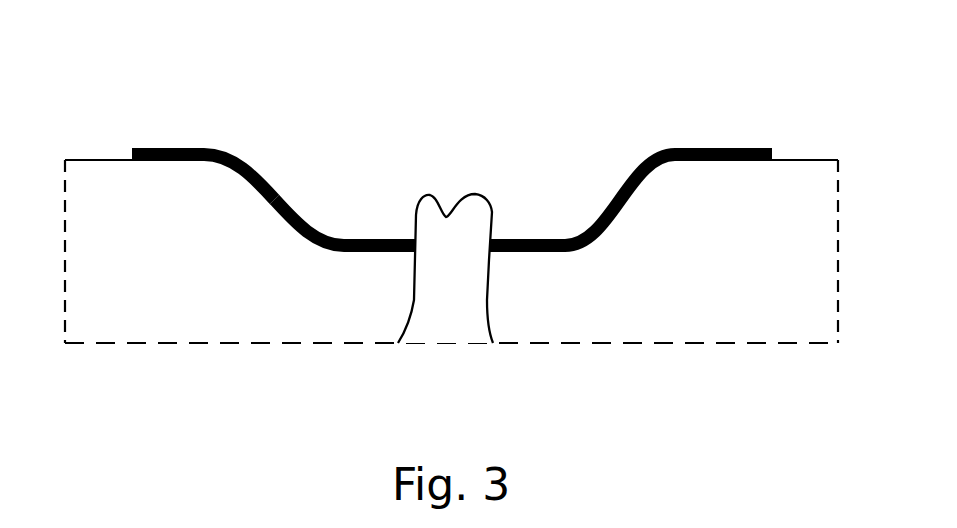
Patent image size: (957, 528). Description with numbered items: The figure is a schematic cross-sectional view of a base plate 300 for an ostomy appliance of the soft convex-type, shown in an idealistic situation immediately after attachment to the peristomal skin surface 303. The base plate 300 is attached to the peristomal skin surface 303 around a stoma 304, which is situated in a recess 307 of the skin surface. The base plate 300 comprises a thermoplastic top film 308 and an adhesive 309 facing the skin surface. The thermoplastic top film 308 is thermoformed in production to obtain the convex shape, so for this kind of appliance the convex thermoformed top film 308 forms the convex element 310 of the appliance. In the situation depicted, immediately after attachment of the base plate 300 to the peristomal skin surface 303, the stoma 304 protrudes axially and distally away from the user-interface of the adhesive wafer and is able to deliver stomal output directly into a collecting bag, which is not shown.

The base plate 300 is at (196, 124).
The peristomal skin surface 303 is at (333, 248).
The stoma 304 is at (472, 203).
The recess 307 is at (283, 188).
The thermoplastic top film 308 is at (717, 148).
The adhesive 309 is at (772, 157).
The convex element 310 is at (317, 226).